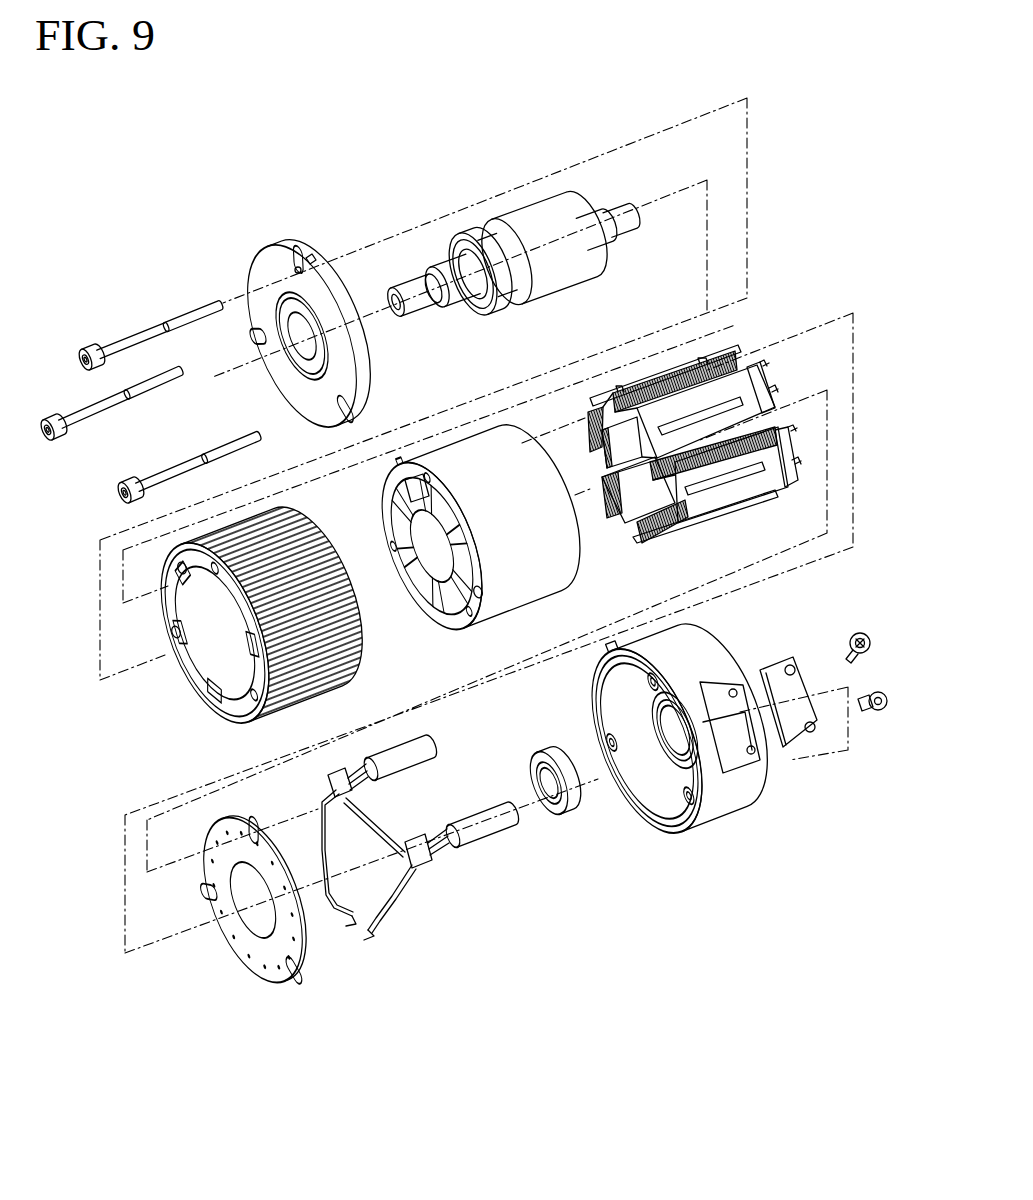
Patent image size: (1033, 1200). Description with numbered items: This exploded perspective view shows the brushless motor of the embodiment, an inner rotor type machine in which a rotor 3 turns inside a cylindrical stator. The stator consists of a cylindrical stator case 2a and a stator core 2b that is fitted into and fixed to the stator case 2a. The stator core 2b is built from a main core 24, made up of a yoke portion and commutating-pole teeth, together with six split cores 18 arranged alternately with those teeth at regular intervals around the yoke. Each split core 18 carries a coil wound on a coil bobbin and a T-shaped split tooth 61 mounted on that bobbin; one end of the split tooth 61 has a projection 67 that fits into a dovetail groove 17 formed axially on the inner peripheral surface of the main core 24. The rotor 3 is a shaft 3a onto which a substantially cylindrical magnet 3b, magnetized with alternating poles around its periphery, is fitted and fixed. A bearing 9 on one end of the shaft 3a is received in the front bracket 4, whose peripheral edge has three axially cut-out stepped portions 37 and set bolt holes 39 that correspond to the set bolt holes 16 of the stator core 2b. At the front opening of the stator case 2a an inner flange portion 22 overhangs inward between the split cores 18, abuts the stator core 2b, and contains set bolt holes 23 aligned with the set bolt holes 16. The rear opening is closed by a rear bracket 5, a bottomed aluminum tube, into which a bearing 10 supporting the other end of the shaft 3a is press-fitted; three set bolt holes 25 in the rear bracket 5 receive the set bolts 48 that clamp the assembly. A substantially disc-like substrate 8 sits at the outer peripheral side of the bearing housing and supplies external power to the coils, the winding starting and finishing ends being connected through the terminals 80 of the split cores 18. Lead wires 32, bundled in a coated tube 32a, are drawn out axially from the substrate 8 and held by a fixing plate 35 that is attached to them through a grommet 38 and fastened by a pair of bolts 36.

The stator case 2a is at (212, 636).
The stator core 2b is at (623, 444).
The rotor 3 is at (514, 219).
The shaft 3a is at (431, 289).
The magnet 3b is at (544, 248).
The front bracket 4 is at (308, 298).
The rear bracket 5 is at (678, 760).
The substrate 8 is at (303, 968).
The bearing 9 is at (481, 271).
The bearing 10 is at (562, 824).
The set bolt holes 16 is at (421, 478).
The dovetail grooves 17 is at (478, 594).
The split core 18 is at (737, 410).
The inner flange portion 22 is at (178, 568).
The set bolt holes 23 is at (173, 633).
The main core 24 is at (480, 515).
The set bolt holes 25 is at (614, 744).
The lead wires 32 is at (422, 859).
The coated tube 32a is at (487, 825).
The fixing plate 35 is at (800, 733).
The bolts 36 is at (875, 712).
The stepped portions 37 is at (311, 262).
The grommet 38 is at (423, 860).
The set bolt holes 39 is at (298, 264).
The set bolts 48 is at (137, 340).
The split tooth 61 is at (721, 335).
The projection 67 is at (721, 335).
The terminals 80 is at (803, 381).